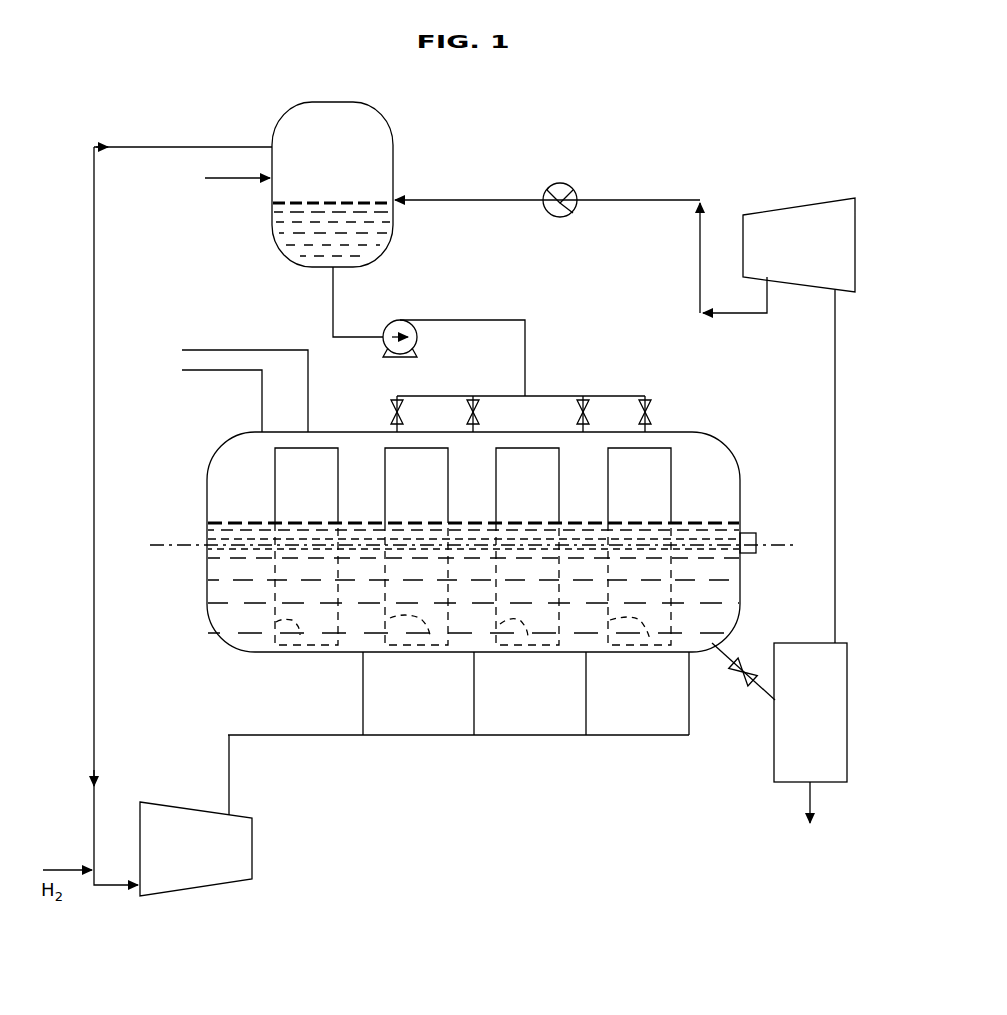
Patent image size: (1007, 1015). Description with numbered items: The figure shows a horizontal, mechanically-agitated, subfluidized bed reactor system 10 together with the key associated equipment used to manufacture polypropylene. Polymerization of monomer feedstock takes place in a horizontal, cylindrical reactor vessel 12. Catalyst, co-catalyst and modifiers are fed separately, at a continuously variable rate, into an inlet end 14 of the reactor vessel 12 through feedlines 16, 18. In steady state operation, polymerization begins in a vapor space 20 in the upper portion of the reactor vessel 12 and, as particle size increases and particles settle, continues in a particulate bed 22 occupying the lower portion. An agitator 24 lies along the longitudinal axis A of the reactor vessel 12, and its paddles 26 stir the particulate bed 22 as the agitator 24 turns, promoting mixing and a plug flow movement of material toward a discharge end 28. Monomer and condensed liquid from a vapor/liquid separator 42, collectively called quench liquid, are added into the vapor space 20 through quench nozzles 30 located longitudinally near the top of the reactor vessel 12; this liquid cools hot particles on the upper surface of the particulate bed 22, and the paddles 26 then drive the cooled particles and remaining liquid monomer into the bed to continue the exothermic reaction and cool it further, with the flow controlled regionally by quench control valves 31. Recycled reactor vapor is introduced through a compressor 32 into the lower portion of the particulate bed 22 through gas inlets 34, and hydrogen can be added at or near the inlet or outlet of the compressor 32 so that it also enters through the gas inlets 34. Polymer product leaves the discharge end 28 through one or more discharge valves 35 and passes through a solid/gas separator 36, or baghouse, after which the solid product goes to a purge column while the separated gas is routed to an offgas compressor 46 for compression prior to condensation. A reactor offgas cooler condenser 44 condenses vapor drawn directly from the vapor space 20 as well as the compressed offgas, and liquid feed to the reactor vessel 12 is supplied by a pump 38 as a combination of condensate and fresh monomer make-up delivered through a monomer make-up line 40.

The subfluidized bed reactor system 10 is at (642, 89).
The reactor vessel 12 is at (736, 470).
The inlet end 14 is at (198, 465).
The feedline 16 is at (212, 350).
The feedline 18 is at (212, 370).
The vapor space 20 is at (233, 467).
The particulate bed 22 is at (252, 642).
The agitator 24 is at (752, 533).
The paddles 26 is at (392, 477).
The discharge end 28 is at (749, 607).
The quench nozzles 30 is at (394, 428).
The quench control valves 31 is at (468, 410).
The compressor 32 is at (252, 848).
The gas inlets 34 is at (473, 716).
The discharge valves 35 is at (738, 681).
The solid/gas separator 36 is at (774, 755).
The pump 38 is at (392, 321).
The monomer make-up line 40 is at (232, 180).
The vapor/liquid separator 42 is at (297, 103).
The reactor offgas cooler condenser 44 is at (556, 183).
The offgas compressor 46 is at (786, 208).
The longitudinal axis A is at (165, 545).